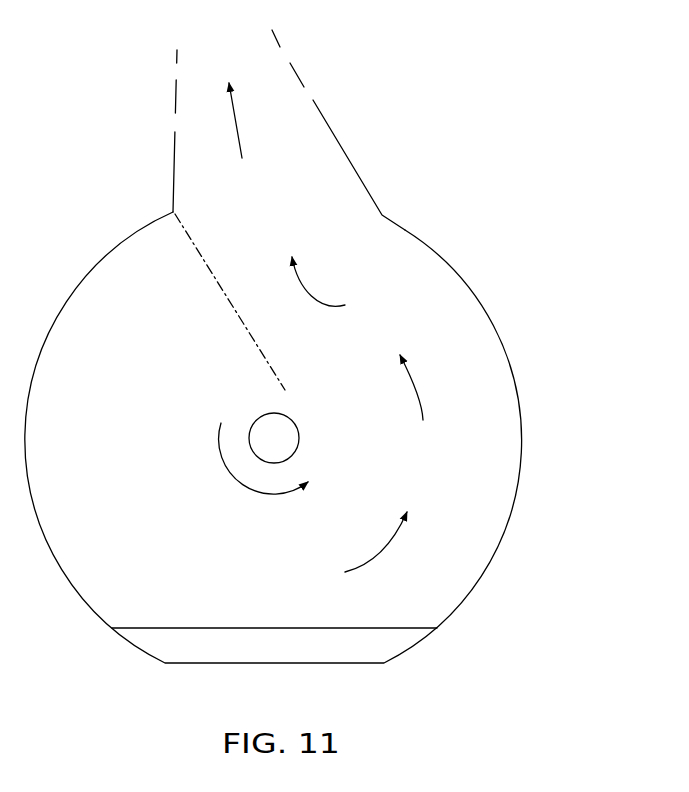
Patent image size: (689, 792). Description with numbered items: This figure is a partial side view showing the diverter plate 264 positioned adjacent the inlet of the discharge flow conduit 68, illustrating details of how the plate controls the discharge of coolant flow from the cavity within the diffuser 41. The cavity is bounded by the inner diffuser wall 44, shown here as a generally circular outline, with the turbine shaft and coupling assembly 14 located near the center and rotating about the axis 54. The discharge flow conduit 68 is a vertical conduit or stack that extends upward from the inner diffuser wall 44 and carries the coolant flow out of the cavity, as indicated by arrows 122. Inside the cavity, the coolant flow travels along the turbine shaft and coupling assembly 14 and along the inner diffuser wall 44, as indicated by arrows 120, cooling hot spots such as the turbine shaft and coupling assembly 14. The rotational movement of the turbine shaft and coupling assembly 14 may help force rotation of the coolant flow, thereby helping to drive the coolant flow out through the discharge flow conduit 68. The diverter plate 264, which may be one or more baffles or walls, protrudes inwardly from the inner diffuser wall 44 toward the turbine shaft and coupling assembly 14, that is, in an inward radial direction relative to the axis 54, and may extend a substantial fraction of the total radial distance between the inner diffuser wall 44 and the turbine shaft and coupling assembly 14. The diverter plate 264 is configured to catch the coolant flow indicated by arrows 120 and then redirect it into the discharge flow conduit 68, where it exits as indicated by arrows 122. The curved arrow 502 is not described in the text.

The diffuser 41 is at (535, 372).
The inner diffuser wall 44 is at (485, 307).
The discharge flow conduit 68 is at (350, 160).
The arrows 122 is at (237, 127).
The rotational flow direction 502 is at (313, 292).
The diverter plate 264 is at (228, 302).
The turbine shaft and coupling assembly 14 is at (215, 403).
The axis 54 is at (299, 440).
The arrows 120 is at (417, 393).